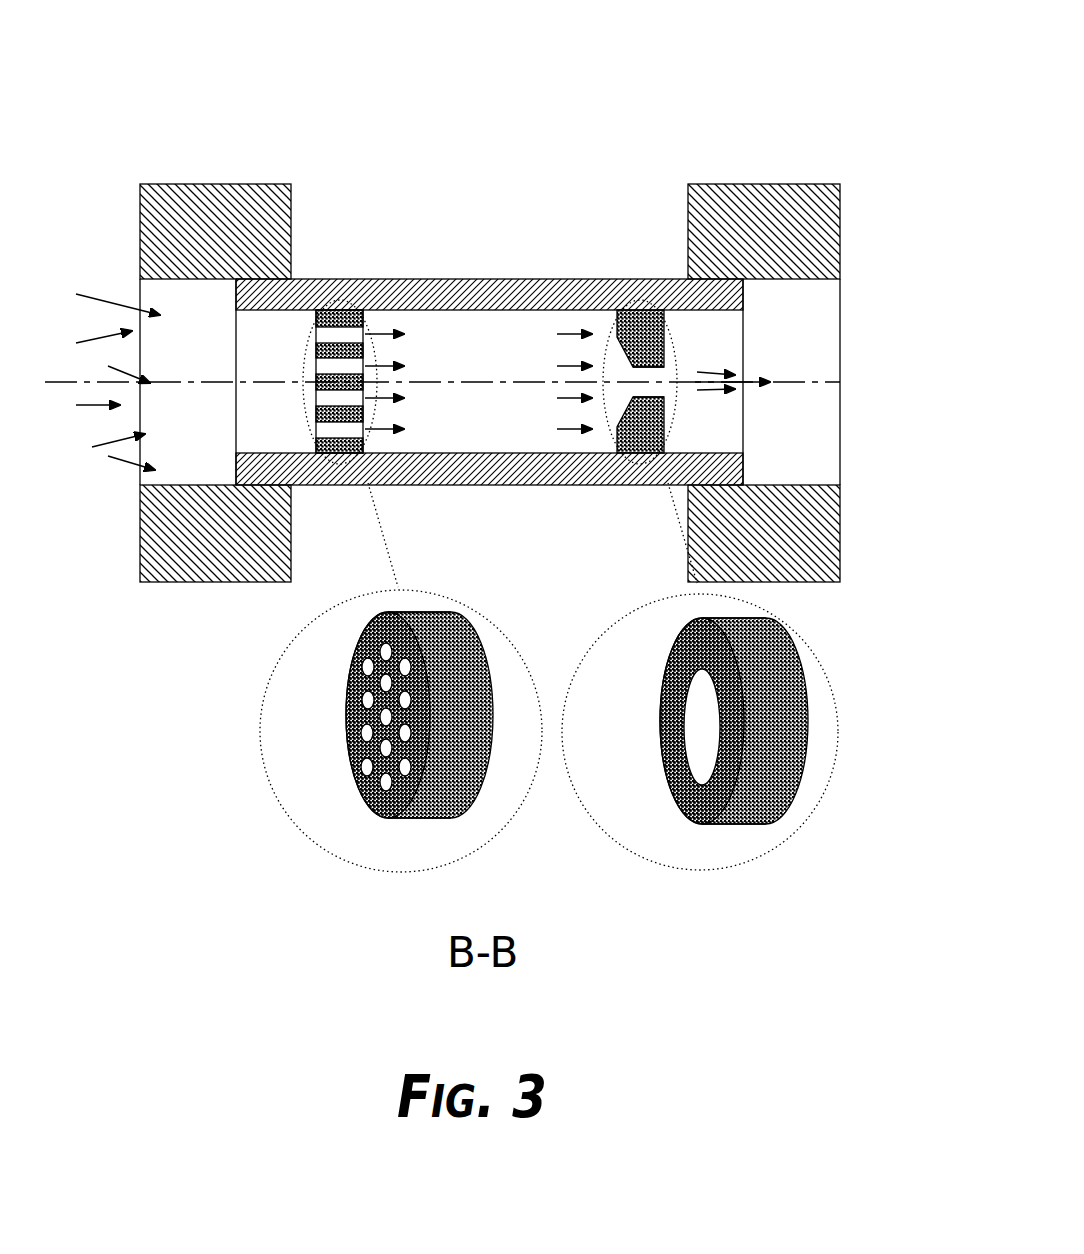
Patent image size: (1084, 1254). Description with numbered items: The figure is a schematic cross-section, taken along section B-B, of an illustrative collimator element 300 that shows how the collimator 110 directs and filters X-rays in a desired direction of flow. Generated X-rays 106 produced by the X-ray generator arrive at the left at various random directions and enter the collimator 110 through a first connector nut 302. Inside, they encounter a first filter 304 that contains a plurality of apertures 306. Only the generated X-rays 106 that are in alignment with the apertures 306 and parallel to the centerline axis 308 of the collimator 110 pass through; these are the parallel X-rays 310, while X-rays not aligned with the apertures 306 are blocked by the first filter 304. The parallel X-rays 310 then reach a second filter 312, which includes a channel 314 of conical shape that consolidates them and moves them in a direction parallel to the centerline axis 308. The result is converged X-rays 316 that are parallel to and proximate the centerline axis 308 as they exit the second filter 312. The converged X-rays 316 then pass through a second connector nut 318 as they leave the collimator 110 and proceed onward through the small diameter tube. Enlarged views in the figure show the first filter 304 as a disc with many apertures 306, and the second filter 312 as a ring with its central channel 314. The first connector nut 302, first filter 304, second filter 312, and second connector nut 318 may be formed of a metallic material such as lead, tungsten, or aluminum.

The collimator element 300 is at (188, 44).
The generated X-rays 106 is at (86, 262).
The first connector nut 302 is at (216, 210).
The collimator 110 is at (498, 168).
The second filter 312 is at (612, 288).
The second connector nut 318 is at (700, 227).
The first filter 304 is at (338, 303).
The apertures 306 is at (338, 428).
The converged X-rays 316 is at (746, 352).
The centerline axis 308 is at (690, 384).
The parallel X-rays 310 is at (404, 448).
The channel 314 is at (700, 722).